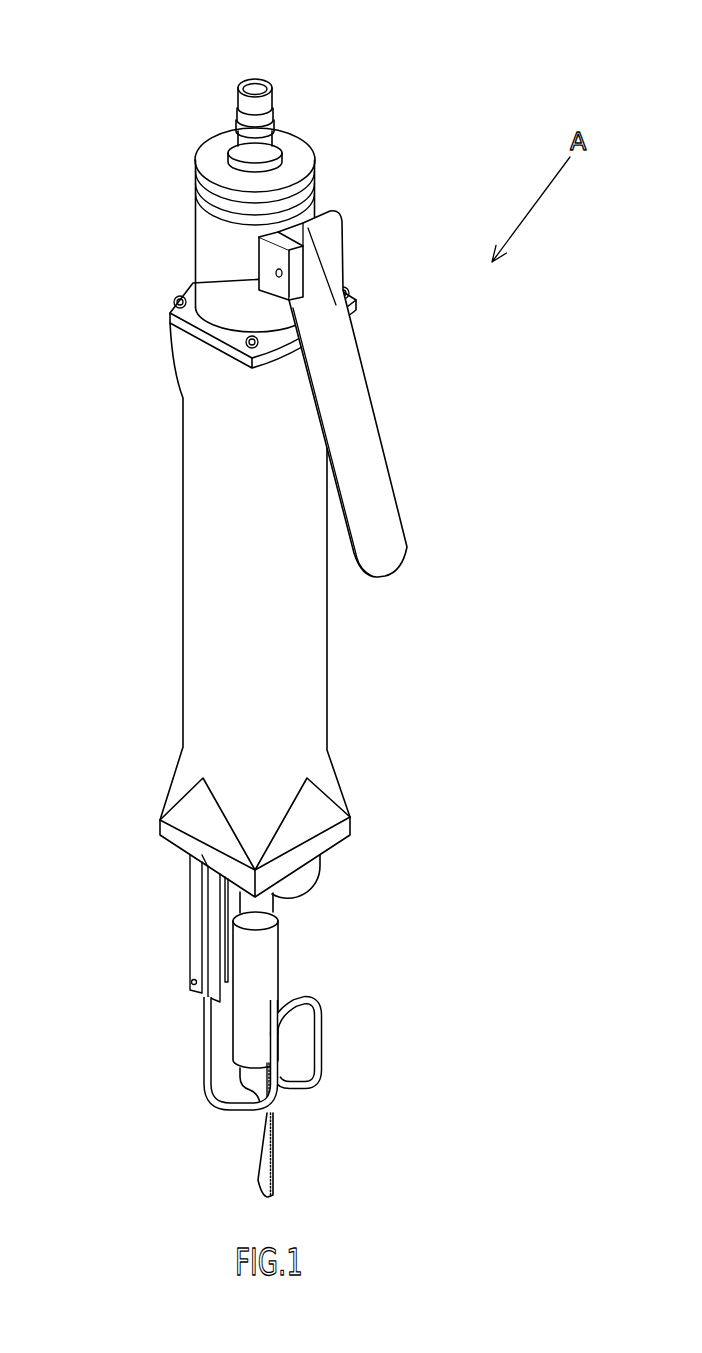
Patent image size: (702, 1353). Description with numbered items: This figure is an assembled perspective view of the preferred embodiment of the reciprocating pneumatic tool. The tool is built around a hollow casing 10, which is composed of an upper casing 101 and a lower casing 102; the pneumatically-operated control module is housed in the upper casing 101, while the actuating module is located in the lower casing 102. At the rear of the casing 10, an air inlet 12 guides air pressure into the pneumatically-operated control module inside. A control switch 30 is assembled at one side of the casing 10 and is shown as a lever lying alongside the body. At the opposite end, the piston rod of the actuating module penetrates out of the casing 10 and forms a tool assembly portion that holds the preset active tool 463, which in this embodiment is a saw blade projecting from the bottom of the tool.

The casing 10 is at (199, 512).
The upper casing 101 is at (185, 248).
The lower casing 102 is at (221, 609).
The air inlet 12 is at (253, 88).
The control switch 30 is at (362, 428).
The active tool 463 is at (280, 1143).